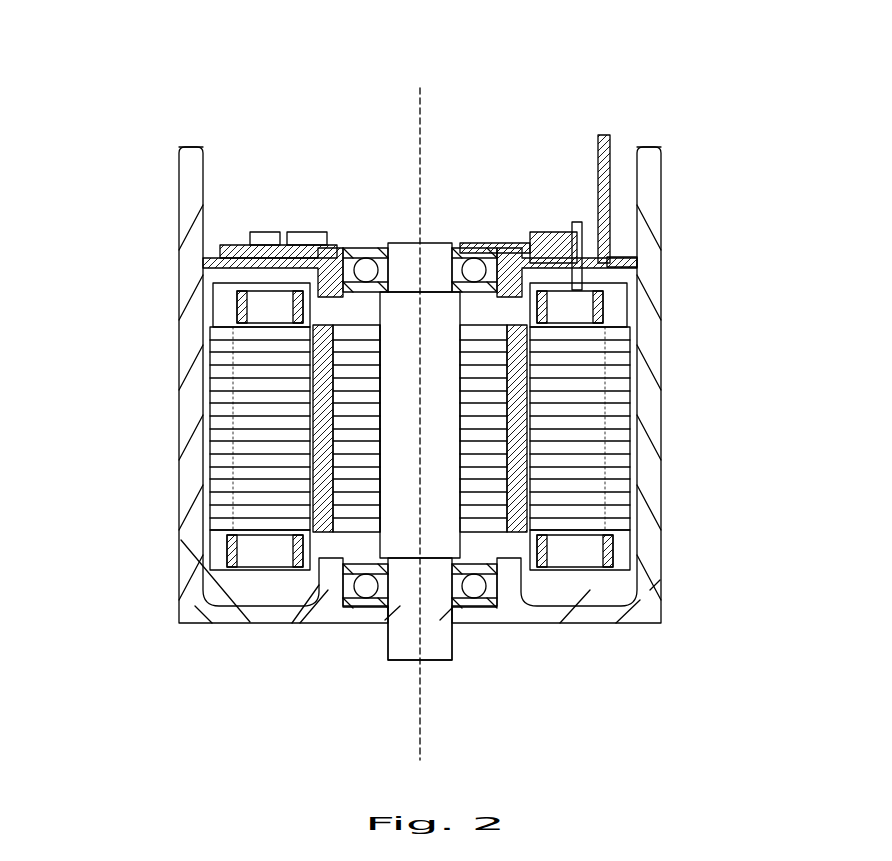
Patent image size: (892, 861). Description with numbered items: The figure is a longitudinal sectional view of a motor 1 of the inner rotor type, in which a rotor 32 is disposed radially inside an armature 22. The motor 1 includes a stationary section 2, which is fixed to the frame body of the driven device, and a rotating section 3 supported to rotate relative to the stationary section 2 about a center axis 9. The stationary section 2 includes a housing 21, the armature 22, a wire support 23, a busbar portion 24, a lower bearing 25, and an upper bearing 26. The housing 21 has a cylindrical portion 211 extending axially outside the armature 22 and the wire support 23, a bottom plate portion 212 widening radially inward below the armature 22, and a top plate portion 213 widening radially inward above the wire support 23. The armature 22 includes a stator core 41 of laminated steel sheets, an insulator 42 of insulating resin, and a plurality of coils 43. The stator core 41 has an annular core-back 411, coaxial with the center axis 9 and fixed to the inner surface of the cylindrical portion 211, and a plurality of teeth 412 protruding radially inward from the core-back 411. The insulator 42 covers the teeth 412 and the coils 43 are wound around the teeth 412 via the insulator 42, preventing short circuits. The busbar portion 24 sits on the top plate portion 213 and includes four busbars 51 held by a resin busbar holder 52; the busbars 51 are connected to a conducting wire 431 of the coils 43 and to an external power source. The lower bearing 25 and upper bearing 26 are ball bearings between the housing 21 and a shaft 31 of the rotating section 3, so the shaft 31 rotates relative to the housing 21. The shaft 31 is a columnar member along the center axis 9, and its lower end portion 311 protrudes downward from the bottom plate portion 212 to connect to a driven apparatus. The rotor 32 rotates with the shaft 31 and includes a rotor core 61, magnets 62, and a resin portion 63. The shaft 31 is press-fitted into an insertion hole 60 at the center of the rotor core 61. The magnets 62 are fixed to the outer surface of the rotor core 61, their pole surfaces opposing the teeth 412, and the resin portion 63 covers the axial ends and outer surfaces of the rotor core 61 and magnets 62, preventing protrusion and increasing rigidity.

The motor 1 is at (290, 88).
The stationary section 2 is at (600, 642).
The rotating section 3 is at (402, 446).
The center axis 9 is at (420, 122).
The housing 21 is at (185, 444).
The armature 22 is at (669, 426).
The wire support 23 is at (640, 277).
The busbar portion 24 is at (278, 199).
The lower bearing 25 is at (475, 607).
The upper bearing 26 is at (470, 248).
The shaft 31 is at (410, 268).
The rotor 32 is at (402, 500).
The stator core 41 is at (646, 428).
The insulator 42 is at (627, 330).
The coils 43 is at (633, 310).
The busbars 51 is at (307, 212).
The busbar holder 52 is at (265, 236).
The insertion hole 60 is at (400, 337).
The rotor core 61 is at (356, 532).
The magnets 62 is at (322, 535).
The resin portion 63 is at (383, 562).
The cylindrical portion 211 is at (200, 372).
The bottom plate portion 212 is at (208, 532).
The top plate portion 213 is at (215, 287).
The lower end portion 311 is at (438, 640).
The core-back 411 is at (630, 443).
The teeth 412 is at (630, 412).
The conducting wire 431 is at (560, 250).